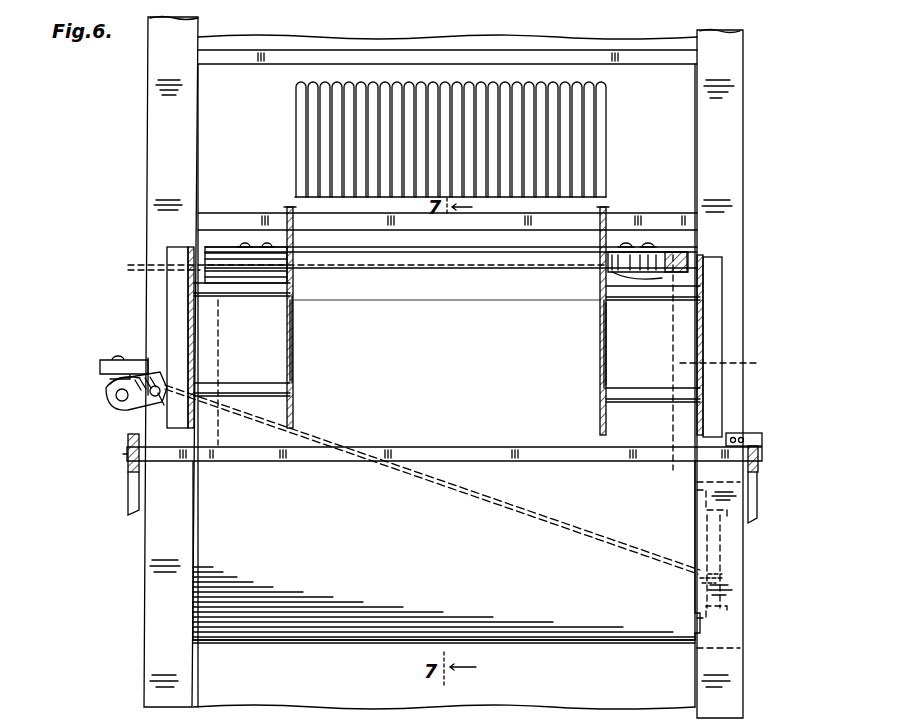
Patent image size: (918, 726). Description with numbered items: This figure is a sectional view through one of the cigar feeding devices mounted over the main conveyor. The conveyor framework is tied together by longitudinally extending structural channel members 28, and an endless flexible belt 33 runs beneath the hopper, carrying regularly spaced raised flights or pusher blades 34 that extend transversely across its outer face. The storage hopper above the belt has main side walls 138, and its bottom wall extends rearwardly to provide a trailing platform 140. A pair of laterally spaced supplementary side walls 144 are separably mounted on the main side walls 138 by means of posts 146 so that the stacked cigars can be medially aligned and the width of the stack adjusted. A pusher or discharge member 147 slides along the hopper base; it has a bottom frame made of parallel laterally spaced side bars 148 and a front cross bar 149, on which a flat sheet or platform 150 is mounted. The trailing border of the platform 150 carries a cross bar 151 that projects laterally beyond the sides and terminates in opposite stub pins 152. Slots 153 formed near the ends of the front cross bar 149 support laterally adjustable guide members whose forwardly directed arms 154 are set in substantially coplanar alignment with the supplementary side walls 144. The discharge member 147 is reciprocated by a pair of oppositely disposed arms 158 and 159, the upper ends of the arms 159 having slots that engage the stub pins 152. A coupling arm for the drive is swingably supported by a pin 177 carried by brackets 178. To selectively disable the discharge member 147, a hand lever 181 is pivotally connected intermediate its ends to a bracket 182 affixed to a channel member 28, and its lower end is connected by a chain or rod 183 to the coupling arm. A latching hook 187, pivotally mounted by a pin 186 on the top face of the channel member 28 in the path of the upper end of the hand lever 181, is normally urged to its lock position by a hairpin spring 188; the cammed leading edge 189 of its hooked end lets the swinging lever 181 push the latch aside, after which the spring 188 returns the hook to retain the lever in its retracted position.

The structural channel member 28 is at (156, 620).
The endless flexible belt 33 is at (654, 80).
The pusher blade 34 is at (270, 64).
The comb C is at (444, 92).
The side wall 138 is at (192, 348).
The trailing platform 140 is at (440, 566).
The supplementary side wall 144 is at (292, 360).
The post 146 is at (292, 286).
The discharge member 147 is at (292, 334).
The side bar 148 is at (762, 356).
The front cross bar 149 is at (698, 242).
The platform 150 is at (490, 422).
The cross bar 151 is at (589, 462).
The stub pin 152 is at (120, 454).
The slot 153 is at (666, 248).
The arm 154 is at (286, 210).
The arm 158 is at (128, 492).
The arm 159 is at (758, 484).
The pin 177 is at (724, 576).
The bracket 178 is at (698, 510).
The hand lever 181 is at (104, 372).
The bracket 182 is at (136, 360).
The chain or rod 183 is at (590, 540).
The pin 186 is at (152, 410).
The latching hook 187 is at (122, 404).
The hairpin spring 188 is at (194, 392).
The leading edge 189 is at (112, 386).